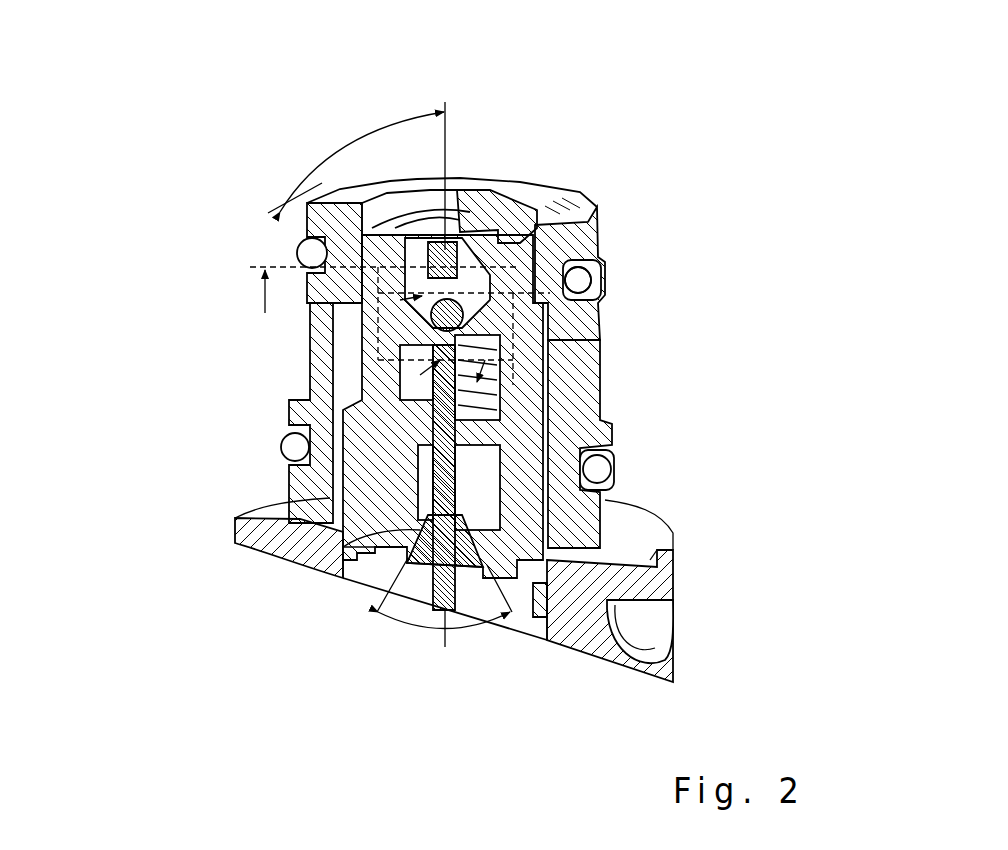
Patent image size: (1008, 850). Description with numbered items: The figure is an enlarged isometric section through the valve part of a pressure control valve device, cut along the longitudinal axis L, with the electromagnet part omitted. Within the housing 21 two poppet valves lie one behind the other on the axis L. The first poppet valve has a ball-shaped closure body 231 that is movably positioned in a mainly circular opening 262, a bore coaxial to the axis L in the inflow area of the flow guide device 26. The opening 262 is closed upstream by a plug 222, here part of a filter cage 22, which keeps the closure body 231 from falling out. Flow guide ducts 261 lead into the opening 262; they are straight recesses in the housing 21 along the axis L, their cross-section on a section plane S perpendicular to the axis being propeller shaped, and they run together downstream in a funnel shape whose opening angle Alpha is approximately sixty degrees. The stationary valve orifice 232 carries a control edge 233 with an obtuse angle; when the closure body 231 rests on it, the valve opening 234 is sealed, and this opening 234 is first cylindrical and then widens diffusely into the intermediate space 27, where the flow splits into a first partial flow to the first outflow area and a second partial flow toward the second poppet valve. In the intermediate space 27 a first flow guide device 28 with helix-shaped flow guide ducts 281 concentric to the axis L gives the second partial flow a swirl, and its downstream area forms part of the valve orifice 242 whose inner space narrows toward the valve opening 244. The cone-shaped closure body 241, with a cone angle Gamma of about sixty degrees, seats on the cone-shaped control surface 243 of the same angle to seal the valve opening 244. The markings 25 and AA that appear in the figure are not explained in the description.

The housing 21 is at (275, 555).
The filter cage 22 is at (600, 212).
The shaft 25 is at (505, 612).
The flow guide device 26 is at (605, 282).
The intermediate space 27 is at (604, 447).
The first flow guide device 28 is at (600, 552).
The plug 222 is at (458, 240).
The closure body 231 is at (553, 327).
The valve orifice 232 is at (297, 396).
The control edge 233 is at (548, 365).
The valve opening 234 is at (300, 450).
The closure body 241 is at (407, 550).
The valve orifice 242 is at (550, 552).
The control surface 243 is at (350, 538).
The valve opening 244 is at (612, 603).
The flow guide ducts 261 is at (298, 258).
The opening 262 is at (335, 330).
The flow guide ducts 281 is at (673, 527).
The section plane S is at (262, 297).
The longitudinal axis L is at (446, 124).
The section AA is at (372, 340).
The opening angle Alpha is at (338, 140).
The cone angle Gamma is at (432, 630).